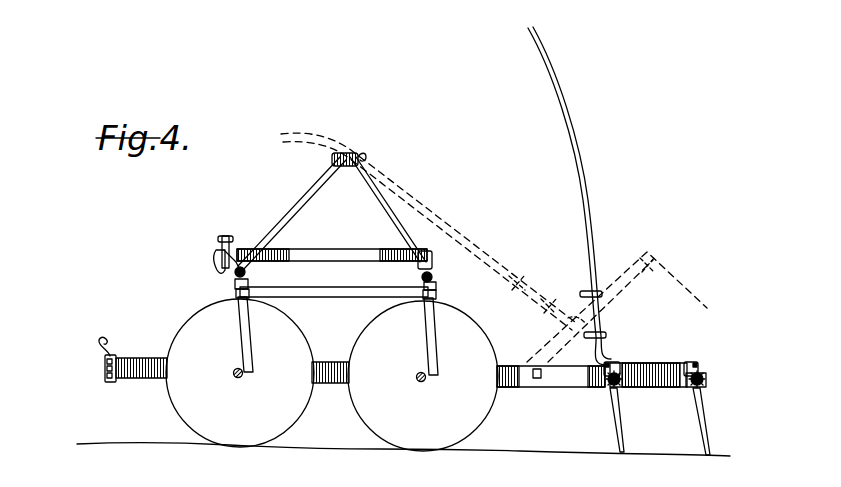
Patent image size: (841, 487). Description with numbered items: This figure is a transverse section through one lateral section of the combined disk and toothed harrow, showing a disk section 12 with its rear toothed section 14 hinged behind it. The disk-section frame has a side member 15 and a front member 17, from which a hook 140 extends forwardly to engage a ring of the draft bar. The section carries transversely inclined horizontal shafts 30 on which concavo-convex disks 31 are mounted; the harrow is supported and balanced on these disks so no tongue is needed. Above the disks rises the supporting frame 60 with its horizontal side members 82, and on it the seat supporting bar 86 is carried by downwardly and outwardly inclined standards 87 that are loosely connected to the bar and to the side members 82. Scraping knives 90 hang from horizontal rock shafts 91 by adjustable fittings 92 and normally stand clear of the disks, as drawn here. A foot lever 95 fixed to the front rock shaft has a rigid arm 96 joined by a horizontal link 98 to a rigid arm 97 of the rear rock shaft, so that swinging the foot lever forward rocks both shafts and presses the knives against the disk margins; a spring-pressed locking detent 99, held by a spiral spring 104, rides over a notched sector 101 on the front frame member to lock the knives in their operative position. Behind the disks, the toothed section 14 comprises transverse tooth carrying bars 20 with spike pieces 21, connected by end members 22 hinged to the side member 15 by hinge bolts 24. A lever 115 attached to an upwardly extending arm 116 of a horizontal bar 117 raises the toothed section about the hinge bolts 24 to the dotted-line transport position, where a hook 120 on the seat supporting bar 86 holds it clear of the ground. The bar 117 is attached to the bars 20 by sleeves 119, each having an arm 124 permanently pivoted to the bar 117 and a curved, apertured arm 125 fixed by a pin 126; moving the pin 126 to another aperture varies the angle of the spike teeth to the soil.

The disk section 12 is at (137, 378).
The rear toothed section 14 is at (644, 396).
The side member 15 is at (128, 358).
The front member 17 is at (105, 368).
The tooth carrying bar 20 is at (611, 383).
The spike piece 21 is at (617, 428).
The end member 22 is at (567, 380).
The hinge bolt 24 is at (538, 380).
The disk shaft 30 is at (234, 373).
The disk 31 is at (195, 413).
The supporting frame 60 is at (425, 250).
The side member of frame 82 is at (277, 242).
The seat supporting bar 86 is at (342, 152).
The standard 87 is at (318, 188).
The scraping knife 90 is at (243, 322).
The rock shaft 91 is at (247, 273).
The fitting 92 is at (250, 286).
The foot lever 95 is at (219, 239).
The rigid arm 96 is at (236, 292).
The rigid arm 97 is at (421, 279).
The link 98 is at (345, 294).
The locking detent 99 is at (216, 258).
The sector 101 is at (216, 270).
The spiral spring 104 is at (224, 237).
The lever 115 is at (587, 228).
The arm 116 is at (604, 354).
The horizontal bar 117 is at (655, 364).
The sleeve 119 is at (618, 381).
The hook 120 is at (361, 155).
The arm 124 is at (654, 361).
The curved arm 125 is at (610, 380).
The pin 126 is at (619, 364).
The hook 140 is at (120, 334).